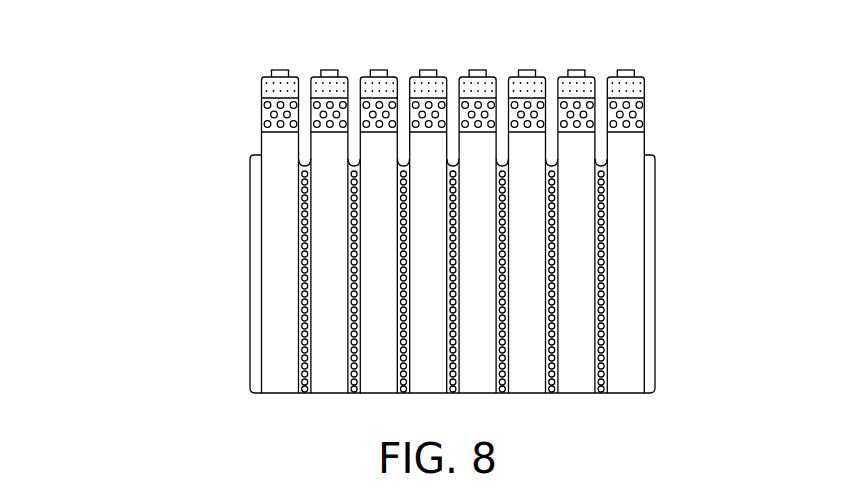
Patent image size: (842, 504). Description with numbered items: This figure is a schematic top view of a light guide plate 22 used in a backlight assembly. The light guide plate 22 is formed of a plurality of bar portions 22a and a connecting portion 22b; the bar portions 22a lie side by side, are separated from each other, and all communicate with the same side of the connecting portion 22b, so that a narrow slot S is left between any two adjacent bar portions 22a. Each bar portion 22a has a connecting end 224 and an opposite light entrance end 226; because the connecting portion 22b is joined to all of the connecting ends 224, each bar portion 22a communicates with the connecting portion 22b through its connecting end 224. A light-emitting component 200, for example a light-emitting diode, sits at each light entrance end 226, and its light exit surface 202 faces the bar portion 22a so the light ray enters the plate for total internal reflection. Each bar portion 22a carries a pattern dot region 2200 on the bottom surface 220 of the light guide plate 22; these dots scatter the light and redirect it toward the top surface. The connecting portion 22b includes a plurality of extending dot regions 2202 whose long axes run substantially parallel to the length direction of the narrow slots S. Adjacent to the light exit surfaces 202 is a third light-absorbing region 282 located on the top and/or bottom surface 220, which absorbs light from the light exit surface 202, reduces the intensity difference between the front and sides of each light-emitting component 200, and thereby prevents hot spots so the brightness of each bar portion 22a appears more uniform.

The light guide plate 22 is at (127, 105).
The bar portion 22a is at (190, 80).
The connecting portion 22b is at (250, 237).
The bottom surface 220 is at (637, 247).
The pattern dot region 2200 is at (637, 125).
The extending dot region 2202 is at (607, 325).
The connecting end 224 is at (262, 148).
The light entrance end 226 is at (262, 92).
The third light-absorbing region 282 is at (633, 88).
The light-emitting component 200 is at (633, 72).
The light exit surface 202 is at (627, 70).
The narrow slot S is at (305, 88).